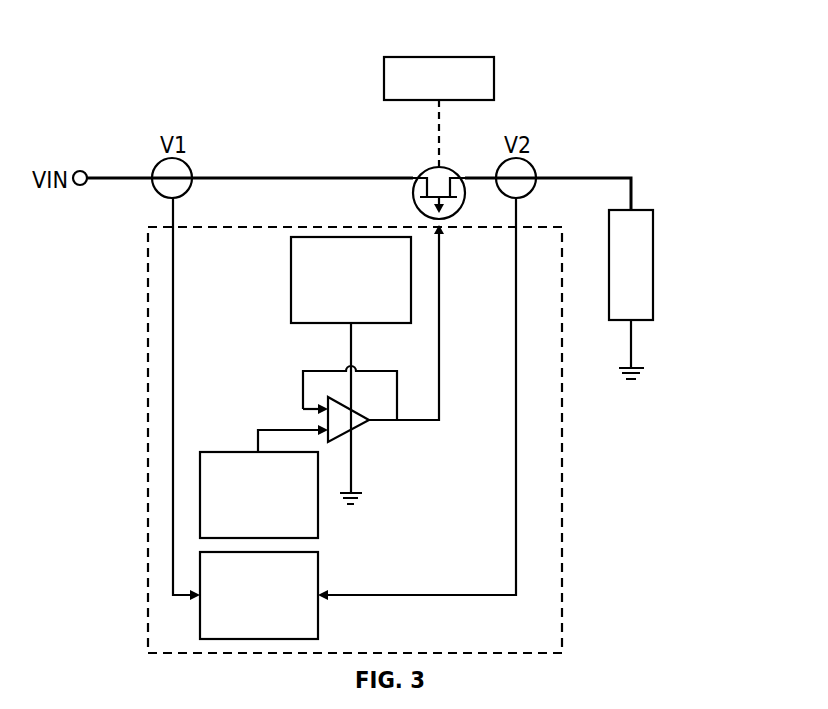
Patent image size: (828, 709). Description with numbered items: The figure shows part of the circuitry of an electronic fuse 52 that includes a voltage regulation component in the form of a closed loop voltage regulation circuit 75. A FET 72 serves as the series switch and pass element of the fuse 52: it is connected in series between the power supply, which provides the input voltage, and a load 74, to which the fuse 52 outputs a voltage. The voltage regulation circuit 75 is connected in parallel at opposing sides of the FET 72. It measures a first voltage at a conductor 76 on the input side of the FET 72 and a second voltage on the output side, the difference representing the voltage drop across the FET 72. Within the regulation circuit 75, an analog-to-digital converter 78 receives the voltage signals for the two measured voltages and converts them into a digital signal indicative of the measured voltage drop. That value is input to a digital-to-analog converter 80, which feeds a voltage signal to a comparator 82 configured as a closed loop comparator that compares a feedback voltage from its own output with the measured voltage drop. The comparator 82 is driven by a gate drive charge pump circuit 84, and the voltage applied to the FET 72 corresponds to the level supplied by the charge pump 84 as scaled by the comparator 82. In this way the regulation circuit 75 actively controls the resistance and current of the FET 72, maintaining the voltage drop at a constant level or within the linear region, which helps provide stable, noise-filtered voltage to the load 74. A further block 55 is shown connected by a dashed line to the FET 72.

The fuse 52 is at (226, 71).
The controller 55 is at (439, 55).
The FET 72 is at (423, 173).
The load 74 is at (653, 265).
The voltage regulation circuit 75 is at (562, 503).
The conductor 76 is at (286, 177).
The analog-to-digital converter 78 is at (320, 578).
The digital-to-analog converter 80 is at (247, 450).
The comparator 82 is at (358, 427).
The gate drive charge pump circuit 84 is at (289, 282).